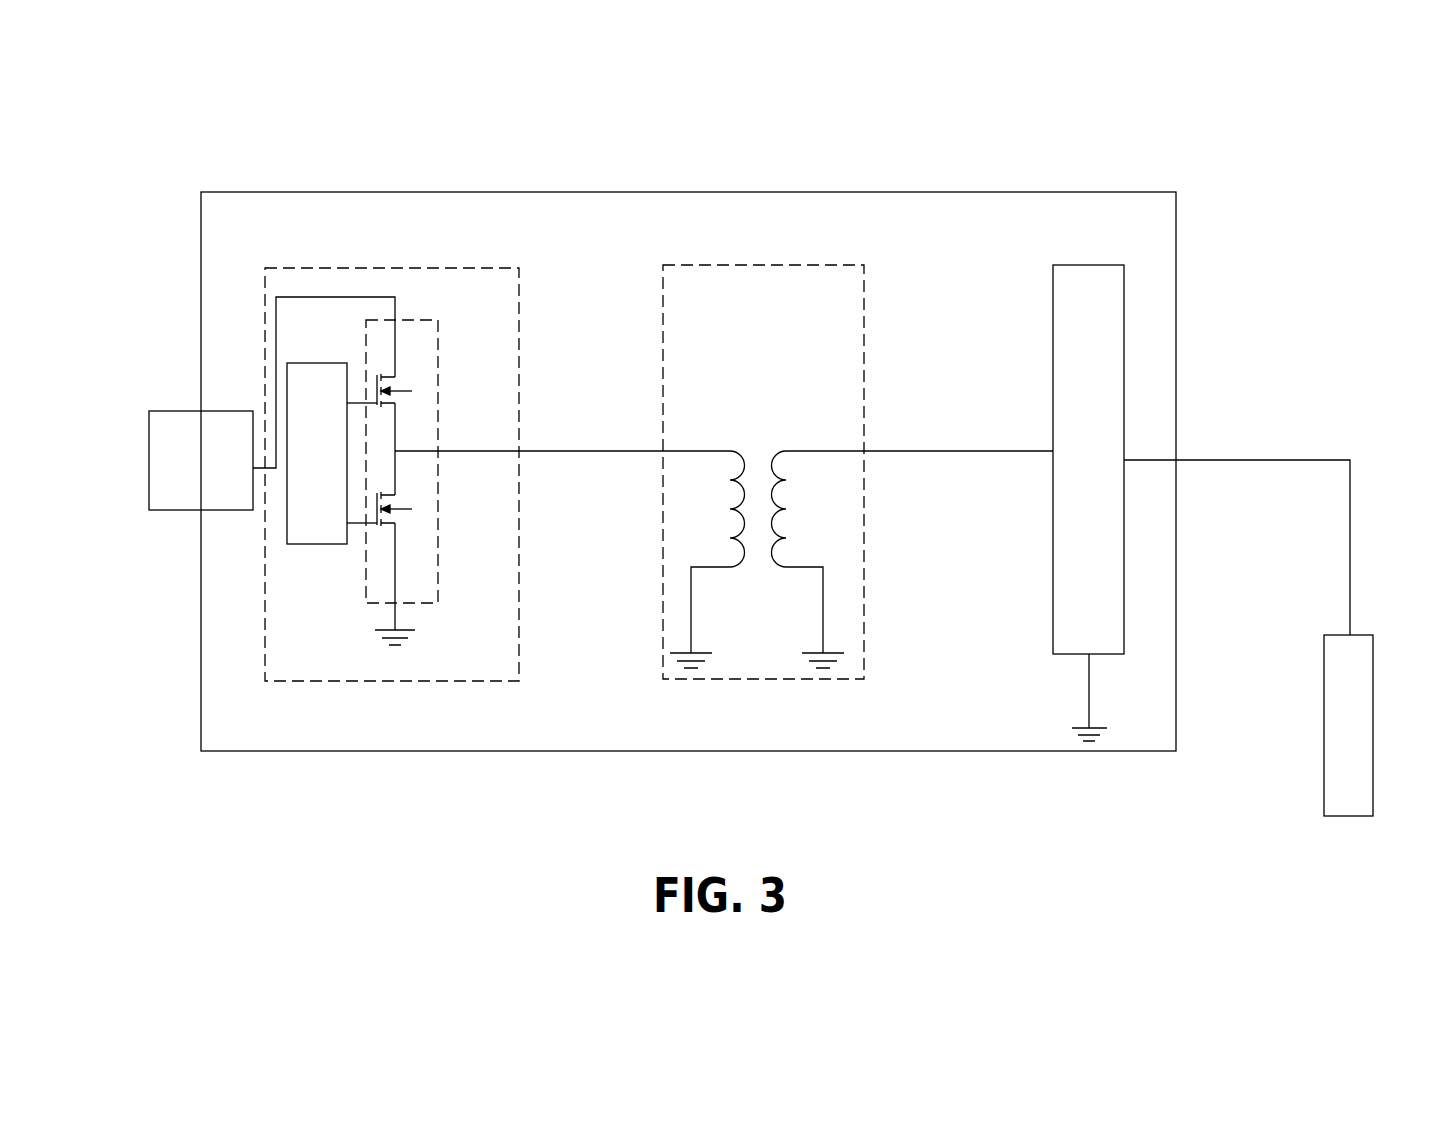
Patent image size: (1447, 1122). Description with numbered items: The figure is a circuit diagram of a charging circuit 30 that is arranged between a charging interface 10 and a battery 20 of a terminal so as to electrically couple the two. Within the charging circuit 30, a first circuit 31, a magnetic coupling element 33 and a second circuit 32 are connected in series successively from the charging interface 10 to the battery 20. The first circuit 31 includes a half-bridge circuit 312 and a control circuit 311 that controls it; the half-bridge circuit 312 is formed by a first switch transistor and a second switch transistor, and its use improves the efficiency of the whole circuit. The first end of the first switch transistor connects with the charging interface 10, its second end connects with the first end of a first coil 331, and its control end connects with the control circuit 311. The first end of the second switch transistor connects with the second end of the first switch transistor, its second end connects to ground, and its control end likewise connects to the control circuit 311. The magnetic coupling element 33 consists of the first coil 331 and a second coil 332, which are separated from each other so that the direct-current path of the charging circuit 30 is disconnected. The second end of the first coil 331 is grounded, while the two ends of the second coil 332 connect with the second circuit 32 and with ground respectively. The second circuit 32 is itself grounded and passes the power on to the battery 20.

The charging interface 10 is at (174, 411).
The battery 20 is at (1368, 635).
The charging circuit 30 is at (1176, 192).
The first circuit 31 is at (410, 267).
The control circuit 311 is at (326, 544).
The half-bridge circuit 312 is at (425, 603).
The second circuit 32 is at (1089, 257).
The magnetic coupling element 33 is at (757, 265).
The first coil 331 is at (720, 450).
The second coil 332 is at (802, 450).